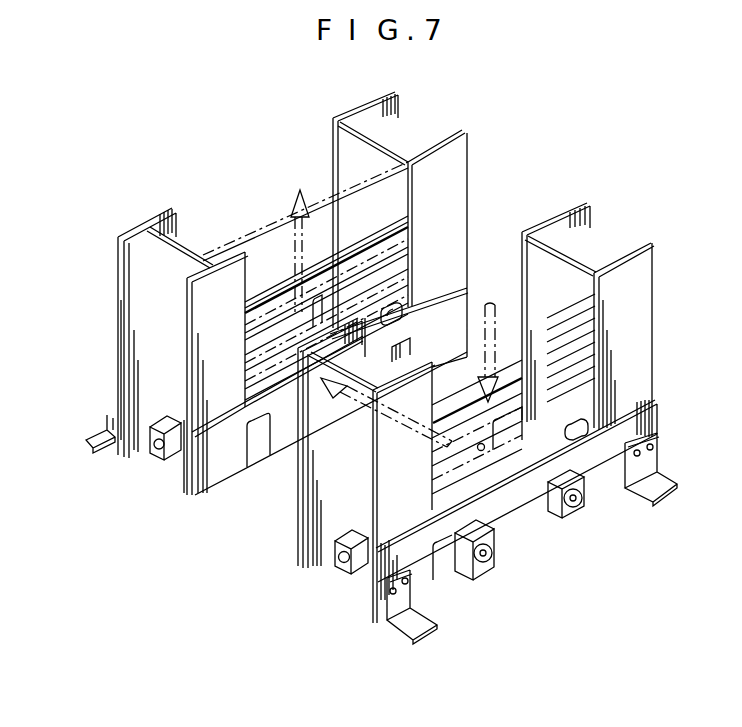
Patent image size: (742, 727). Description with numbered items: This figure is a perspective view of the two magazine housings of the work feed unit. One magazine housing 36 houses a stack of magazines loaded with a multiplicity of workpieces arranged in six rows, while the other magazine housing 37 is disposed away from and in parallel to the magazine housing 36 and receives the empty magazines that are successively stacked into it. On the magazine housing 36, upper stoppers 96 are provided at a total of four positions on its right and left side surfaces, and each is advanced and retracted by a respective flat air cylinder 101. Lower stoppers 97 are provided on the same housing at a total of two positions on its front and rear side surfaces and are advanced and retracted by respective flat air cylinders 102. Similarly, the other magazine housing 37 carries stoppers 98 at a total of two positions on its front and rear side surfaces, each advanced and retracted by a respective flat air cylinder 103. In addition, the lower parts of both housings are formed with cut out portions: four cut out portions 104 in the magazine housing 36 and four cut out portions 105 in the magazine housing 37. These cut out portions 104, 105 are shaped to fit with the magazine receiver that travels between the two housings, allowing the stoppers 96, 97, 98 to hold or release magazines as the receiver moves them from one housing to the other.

The magazine housing 36 is at (645, 324).
The magazine housing 37 is at (432, 172).
The upper stoppers 96 is at (483, 451).
The lower stoppers 97 is at (570, 428).
The stoppers 98 is at (398, 308).
The flat air cylinders 101 is at (488, 557).
The flat air cylinders 102 is at (346, 572).
The flat air cylinders 103 is at (160, 455).
The cut out portions 104 is at (438, 562).
The cut out portions 105 is at (257, 447).